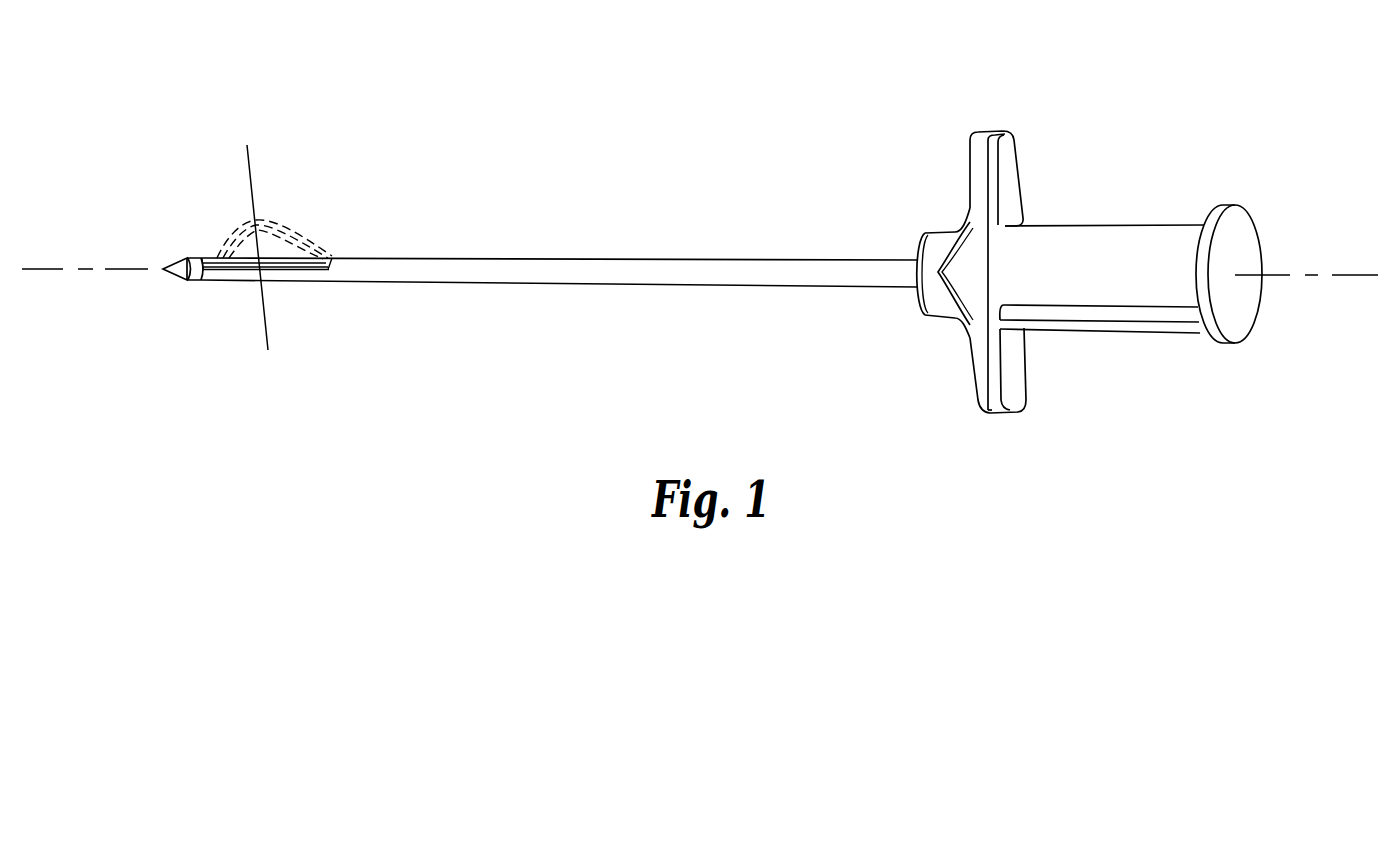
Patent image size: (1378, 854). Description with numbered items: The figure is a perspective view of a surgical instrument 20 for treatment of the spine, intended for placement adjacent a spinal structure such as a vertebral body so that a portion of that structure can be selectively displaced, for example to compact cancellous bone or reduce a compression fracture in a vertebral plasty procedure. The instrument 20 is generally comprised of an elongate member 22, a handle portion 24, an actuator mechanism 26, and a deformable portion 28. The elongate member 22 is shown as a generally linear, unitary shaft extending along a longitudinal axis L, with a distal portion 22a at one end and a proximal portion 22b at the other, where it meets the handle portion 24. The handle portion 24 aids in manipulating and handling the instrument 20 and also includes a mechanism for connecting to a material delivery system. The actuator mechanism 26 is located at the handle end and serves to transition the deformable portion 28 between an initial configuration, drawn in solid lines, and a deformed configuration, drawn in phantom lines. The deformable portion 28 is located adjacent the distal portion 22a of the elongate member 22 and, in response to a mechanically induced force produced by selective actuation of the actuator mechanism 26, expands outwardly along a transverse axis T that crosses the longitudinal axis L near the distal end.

The instrument 20 is at (660, 183).
The elongate member 22 is at (498, 243).
The distal portion 22a is at (222, 297).
The proximal portion 22b is at (885, 297).
The handle portion 24 is at (1008, 113).
The actuator mechanism 26 is at (1145, 202).
The deformable portion 28 is at (235, 228).
The longitudinal axis L is at (700, 252).
The transverse axis T is at (261, 247).